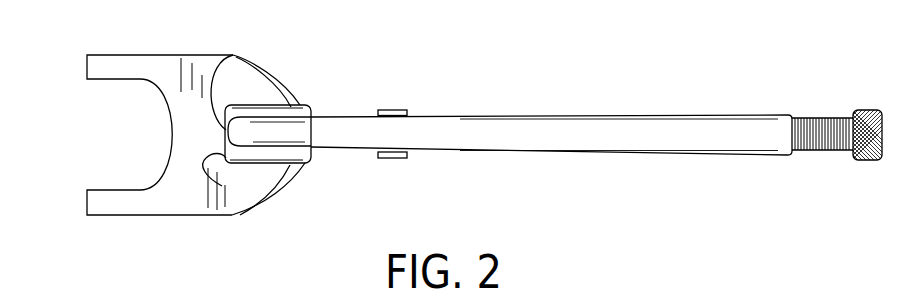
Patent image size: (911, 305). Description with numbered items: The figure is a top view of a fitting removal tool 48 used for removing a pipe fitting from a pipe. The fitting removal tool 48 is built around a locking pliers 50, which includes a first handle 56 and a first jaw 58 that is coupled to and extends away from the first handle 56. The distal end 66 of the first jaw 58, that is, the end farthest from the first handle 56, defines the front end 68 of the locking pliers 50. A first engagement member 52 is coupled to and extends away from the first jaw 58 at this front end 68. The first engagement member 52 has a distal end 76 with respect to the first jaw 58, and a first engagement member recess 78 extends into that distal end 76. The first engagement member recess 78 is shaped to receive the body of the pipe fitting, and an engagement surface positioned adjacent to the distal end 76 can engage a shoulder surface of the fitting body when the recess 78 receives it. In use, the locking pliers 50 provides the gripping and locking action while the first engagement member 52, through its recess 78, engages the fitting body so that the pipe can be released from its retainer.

The fitting removal tool 48 is at (523, 52).
The locking pliers 50 is at (445, 138).
The first engagement member 52 is at (174, 192).
The first handle 56 is at (635, 130).
The first jaw 58 is at (272, 115).
The distal end of the first jaw 66 is at (233, 55).
The front end of the locking pliers 68 is at (222, 186).
The distal end of the first engagement member 76 is at (87, 203).
The first engagement member recess 78 is at (80, 123).